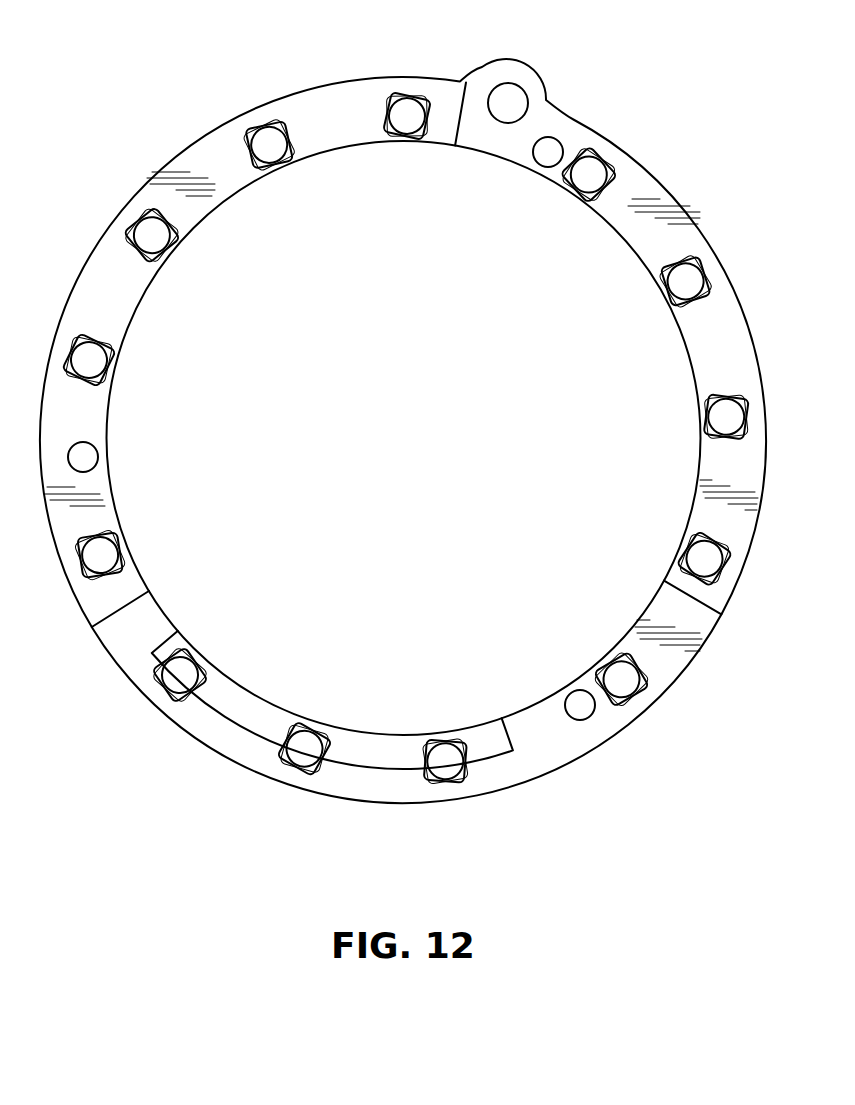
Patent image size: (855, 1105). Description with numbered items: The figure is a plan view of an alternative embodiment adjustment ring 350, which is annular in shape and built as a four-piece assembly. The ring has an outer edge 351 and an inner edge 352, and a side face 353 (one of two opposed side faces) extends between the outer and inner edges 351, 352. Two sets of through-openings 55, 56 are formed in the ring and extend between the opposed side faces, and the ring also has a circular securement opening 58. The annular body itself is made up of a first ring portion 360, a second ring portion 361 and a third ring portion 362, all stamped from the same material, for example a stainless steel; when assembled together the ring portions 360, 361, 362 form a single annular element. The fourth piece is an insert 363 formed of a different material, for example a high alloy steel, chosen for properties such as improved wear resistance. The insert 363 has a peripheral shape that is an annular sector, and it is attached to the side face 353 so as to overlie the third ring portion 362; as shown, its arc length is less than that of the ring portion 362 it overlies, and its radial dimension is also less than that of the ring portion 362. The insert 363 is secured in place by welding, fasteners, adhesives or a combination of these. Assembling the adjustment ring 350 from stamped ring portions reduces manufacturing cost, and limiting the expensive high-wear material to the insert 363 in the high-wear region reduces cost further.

The adjustment ring 350 is at (166, 131).
The outer edge 351 is at (83, 258).
The inner edge 352 is at (147, 315).
The side face 353 is at (650, 195).
The first ring portion 360 is at (345, 103).
The second ring portion 361 is at (725, 337).
The third ring portion 362 is at (512, 772).
The insert 363 is at (378, 745).
The through-openings 55 is at (293, 150).
The through-openings 56 is at (548, 152).
The circular securement opening 58 is at (502, 104).